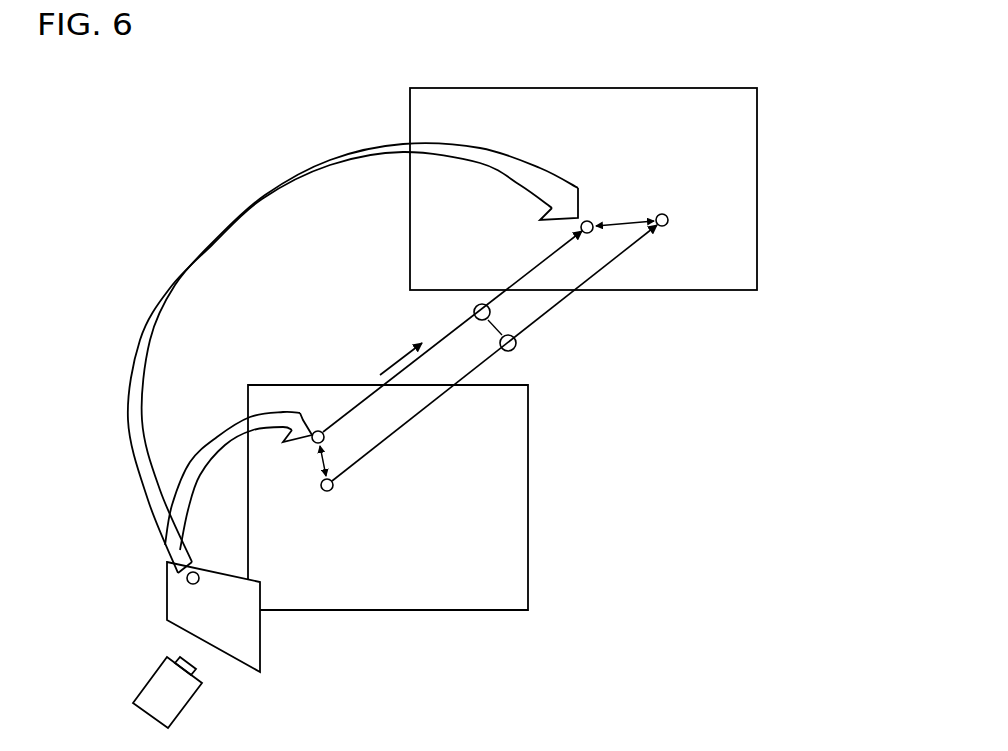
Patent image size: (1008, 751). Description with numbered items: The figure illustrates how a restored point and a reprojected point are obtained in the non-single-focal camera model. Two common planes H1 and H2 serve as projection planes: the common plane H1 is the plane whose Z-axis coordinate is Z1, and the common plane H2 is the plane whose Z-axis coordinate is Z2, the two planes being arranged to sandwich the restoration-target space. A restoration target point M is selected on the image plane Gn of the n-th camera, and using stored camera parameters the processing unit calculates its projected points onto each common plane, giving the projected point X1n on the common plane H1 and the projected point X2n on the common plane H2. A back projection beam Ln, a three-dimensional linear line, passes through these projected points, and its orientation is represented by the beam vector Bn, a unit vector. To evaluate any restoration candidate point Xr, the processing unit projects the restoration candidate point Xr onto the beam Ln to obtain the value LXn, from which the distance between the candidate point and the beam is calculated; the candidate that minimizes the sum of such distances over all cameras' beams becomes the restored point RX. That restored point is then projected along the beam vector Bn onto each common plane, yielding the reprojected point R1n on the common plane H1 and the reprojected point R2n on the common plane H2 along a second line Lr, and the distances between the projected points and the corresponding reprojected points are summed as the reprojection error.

The common plane H2 is at (673, 95).
The common plane H1 is at (522, 556).
The image plane Gn is at (258, 648).
The restoration target point M is at (186, 581).
The projected point X1n is at (324, 419).
The reprojected point R1n is at (335, 502).
The projected point X2n is at (596, 215).
The reprojected point R2n is at (669, 208).
The back projection beam Ln is at (538, 265).
The reference line Lr through R1n and R2n Lr is at (414, 420).
The value obtained by projecting restoration candidate point on beam LXn is at (468, 312).
The restoration candidate point Xr is at (518, 345).
The beam vector Bn is at (397, 358).